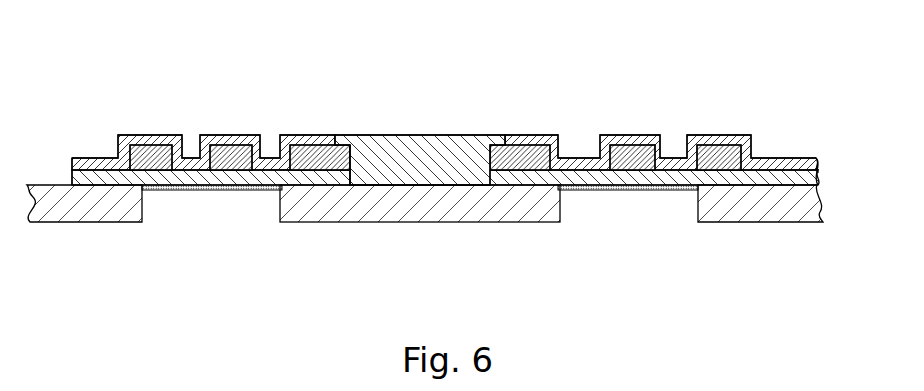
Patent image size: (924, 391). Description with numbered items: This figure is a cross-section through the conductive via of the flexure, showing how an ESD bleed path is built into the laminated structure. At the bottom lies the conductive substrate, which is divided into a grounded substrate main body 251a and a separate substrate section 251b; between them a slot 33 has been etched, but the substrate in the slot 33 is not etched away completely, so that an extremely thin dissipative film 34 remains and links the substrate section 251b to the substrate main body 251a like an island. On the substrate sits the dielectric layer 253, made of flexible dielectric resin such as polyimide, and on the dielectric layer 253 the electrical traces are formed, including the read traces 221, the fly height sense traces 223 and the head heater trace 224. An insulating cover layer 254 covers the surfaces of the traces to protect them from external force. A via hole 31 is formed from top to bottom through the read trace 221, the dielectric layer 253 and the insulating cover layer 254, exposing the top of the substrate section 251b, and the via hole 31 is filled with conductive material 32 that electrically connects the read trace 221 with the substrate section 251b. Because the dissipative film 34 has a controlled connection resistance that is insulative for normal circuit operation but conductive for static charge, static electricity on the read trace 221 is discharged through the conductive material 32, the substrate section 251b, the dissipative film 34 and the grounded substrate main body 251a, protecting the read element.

The fly height sense traces 223 is at (232, 158).
The read traces 221 is at (310, 153).
The head heater trace 224 is at (728, 153).
The via hole 31 is at (350, 147).
The conductive material 32 is at (443, 148).
The slot 33 is at (185, 208).
The dissipative film 34 is at (217, 188).
The dielectric layer 253 is at (810, 178).
The insulating cover layer 254 is at (795, 162).
The substrate main body 251a is at (43, 208).
The substrate section 251b is at (415, 205).